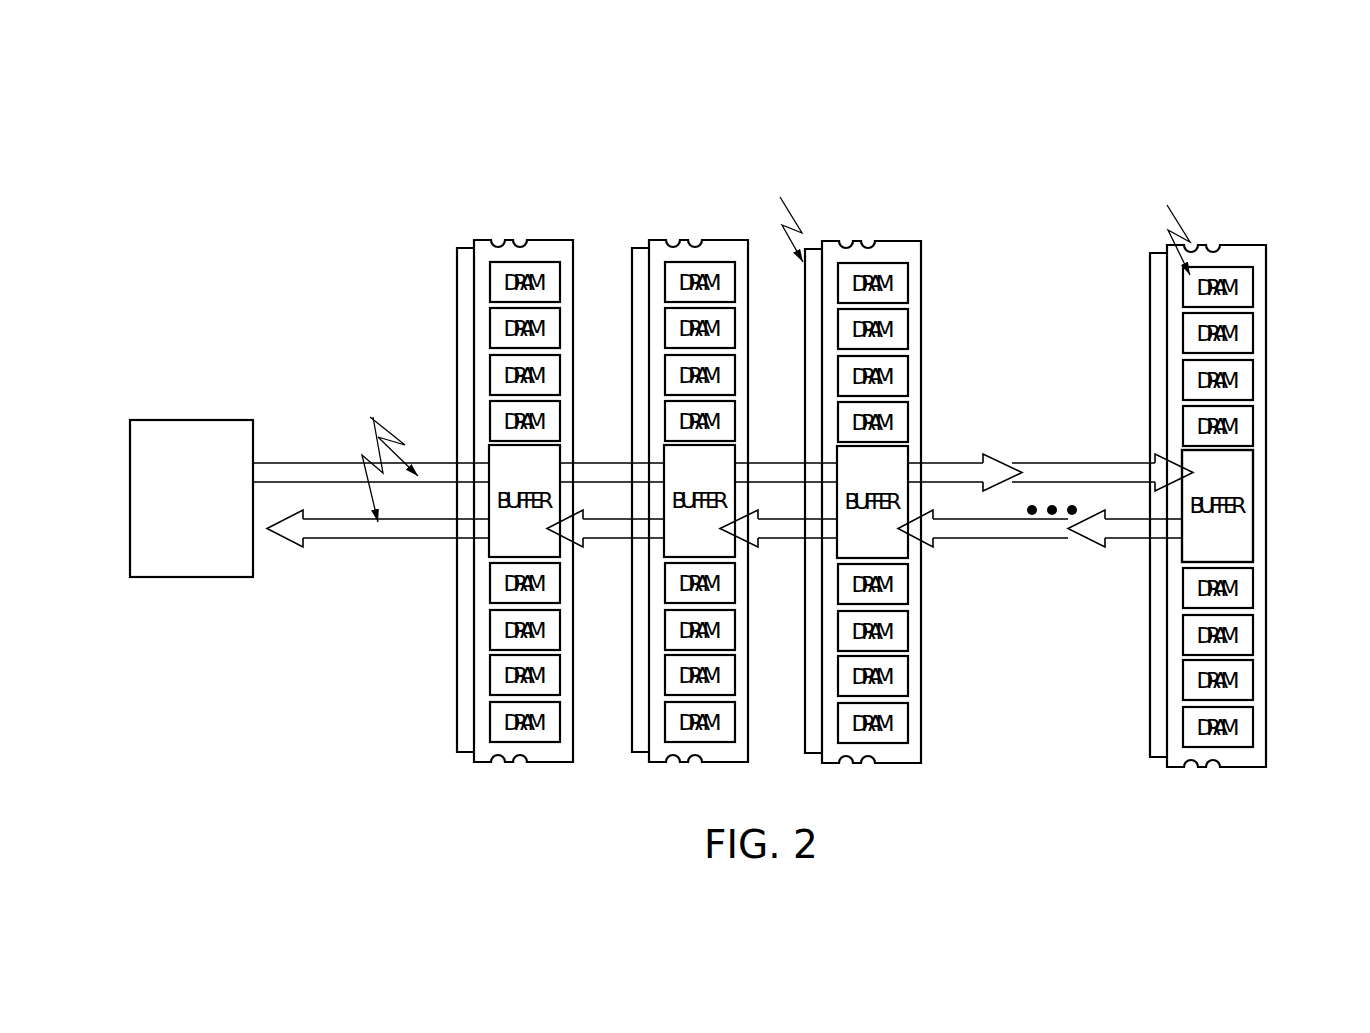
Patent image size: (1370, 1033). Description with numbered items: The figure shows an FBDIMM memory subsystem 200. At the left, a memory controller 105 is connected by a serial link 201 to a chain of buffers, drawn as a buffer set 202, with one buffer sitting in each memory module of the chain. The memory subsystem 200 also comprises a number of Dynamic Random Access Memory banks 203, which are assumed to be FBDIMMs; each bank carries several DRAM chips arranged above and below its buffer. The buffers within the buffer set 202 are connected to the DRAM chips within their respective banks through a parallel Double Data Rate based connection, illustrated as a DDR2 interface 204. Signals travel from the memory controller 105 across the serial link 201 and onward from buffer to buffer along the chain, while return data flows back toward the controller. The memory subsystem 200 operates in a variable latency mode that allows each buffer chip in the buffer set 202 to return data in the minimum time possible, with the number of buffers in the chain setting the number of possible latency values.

The memory controller 105 is at (130, 493).
The memory subsystem 200 is at (825, 399).
The serial link 201 is at (358, 434).
The buffer set 202 is at (1287, 447).
The Dynamic Random Access Memory banks 203 is at (1270, 333).
The DDR2 interface 204 is at (816, 361).